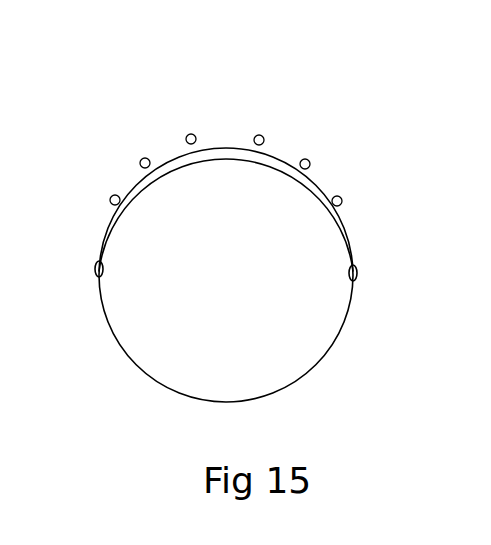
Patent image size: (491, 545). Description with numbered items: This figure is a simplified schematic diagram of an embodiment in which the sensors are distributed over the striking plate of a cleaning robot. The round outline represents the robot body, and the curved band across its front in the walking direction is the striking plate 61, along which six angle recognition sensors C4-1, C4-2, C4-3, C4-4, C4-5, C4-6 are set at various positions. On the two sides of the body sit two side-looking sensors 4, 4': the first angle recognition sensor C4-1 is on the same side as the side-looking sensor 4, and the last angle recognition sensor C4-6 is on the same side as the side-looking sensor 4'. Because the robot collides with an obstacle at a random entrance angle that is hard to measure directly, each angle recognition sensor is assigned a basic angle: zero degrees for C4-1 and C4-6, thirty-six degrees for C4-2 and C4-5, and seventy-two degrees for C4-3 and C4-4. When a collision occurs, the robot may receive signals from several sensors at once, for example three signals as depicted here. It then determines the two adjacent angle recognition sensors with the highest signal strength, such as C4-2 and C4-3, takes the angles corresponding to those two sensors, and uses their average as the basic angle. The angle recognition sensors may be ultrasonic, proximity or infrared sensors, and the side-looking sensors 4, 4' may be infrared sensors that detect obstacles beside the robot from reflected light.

The striking plate 61 is at (213, 137).
The side-looking sensor 4 is at (382, 265).
The side-looking sensor 4' is at (69, 260).
The angle recognition sensor C4-1 is at (340, 196).
The angle recognition sensor C4-2 is at (308, 160).
The angle recognition sensor C4-3 is at (261, 135).
The angle recognition sensor C4-4 is at (189, 134).
The angle recognition sensor C4-5 is at (144, 158).
The angle recognition sensor C4-6 is at (113, 195).